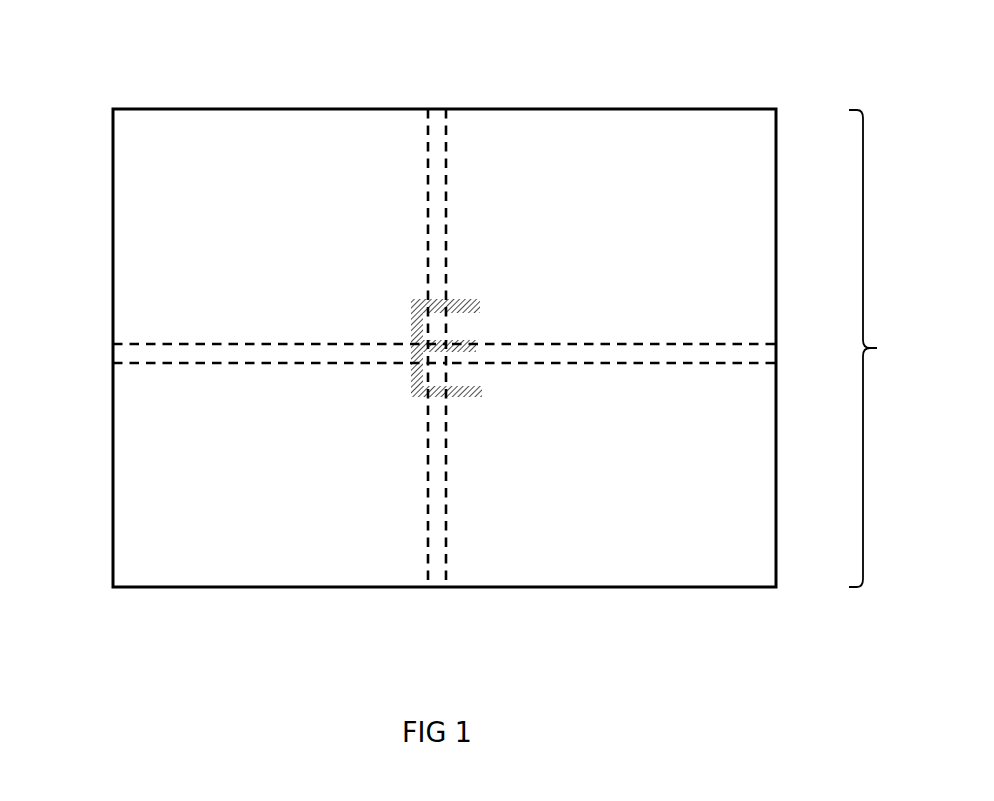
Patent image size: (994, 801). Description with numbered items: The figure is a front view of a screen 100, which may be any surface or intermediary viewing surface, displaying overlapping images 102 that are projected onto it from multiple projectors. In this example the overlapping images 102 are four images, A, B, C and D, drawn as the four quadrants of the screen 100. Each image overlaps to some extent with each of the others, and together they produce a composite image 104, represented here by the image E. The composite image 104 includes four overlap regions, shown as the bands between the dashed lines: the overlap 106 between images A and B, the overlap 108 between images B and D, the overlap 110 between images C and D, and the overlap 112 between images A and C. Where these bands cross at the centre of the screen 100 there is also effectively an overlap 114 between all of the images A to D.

The screen 100 is at (432, 329).
The overlapping images 102 is at (444, 301).
The composite image 104 is at (892, 348).
The overlap 106 is at (437, 130).
The overlap 108 is at (737, 357).
The overlap 110 is at (437, 562).
The overlap 112 is at (122, 353).
The overlap 114 is at (434, 356).